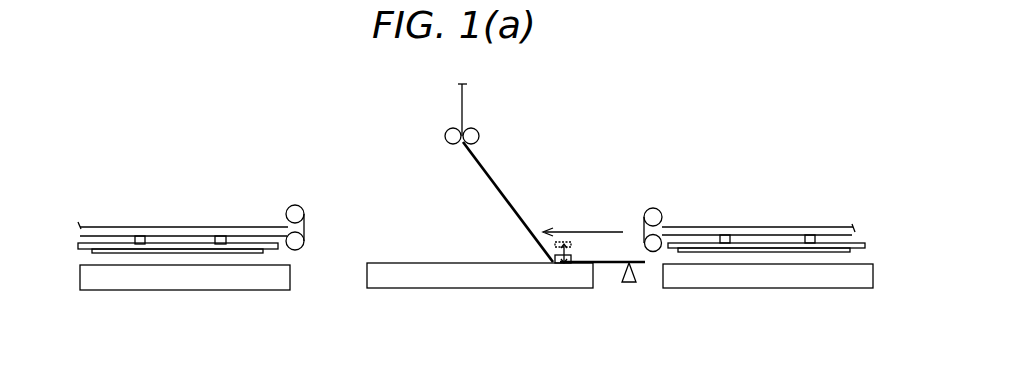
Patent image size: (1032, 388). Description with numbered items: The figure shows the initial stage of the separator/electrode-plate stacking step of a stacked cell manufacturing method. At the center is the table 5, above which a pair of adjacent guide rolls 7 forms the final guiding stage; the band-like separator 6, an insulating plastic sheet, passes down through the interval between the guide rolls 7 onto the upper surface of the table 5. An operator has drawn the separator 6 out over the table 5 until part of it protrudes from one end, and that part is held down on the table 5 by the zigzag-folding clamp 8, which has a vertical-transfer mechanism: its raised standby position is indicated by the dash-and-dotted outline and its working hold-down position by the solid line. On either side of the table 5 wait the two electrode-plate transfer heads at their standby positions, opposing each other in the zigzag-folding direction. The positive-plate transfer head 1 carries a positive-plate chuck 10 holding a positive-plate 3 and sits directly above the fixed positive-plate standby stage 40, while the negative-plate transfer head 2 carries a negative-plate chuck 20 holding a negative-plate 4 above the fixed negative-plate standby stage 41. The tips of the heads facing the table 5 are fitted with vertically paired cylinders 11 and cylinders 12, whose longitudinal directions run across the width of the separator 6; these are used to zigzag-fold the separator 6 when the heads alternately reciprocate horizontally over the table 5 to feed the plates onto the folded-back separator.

The positive-plate transfer head 1 is at (670, 223).
The negative-plate transfer head 2 is at (278, 223).
The positive-plate 3 is at (718, 250).
The negative-plate 4 is at (157, 252).
The table 5 is at (433, 270).
The separator 6 is at (502, 188).
The guide rolls 7 is at (472, 132).
The zigzag-folding clamp 8 is at (577, 255).
The positive-plate chuck 10 is at (772, 247).
The cylinder 11 is at (655, 212).
The cylinder 12 is at (298, 213).
The negative-plate chuck 20 is at (182, 245).
The positive-plate standby stage 40 is at (812, 283).
The negative-plate standby stage 41 is at (252, 282).